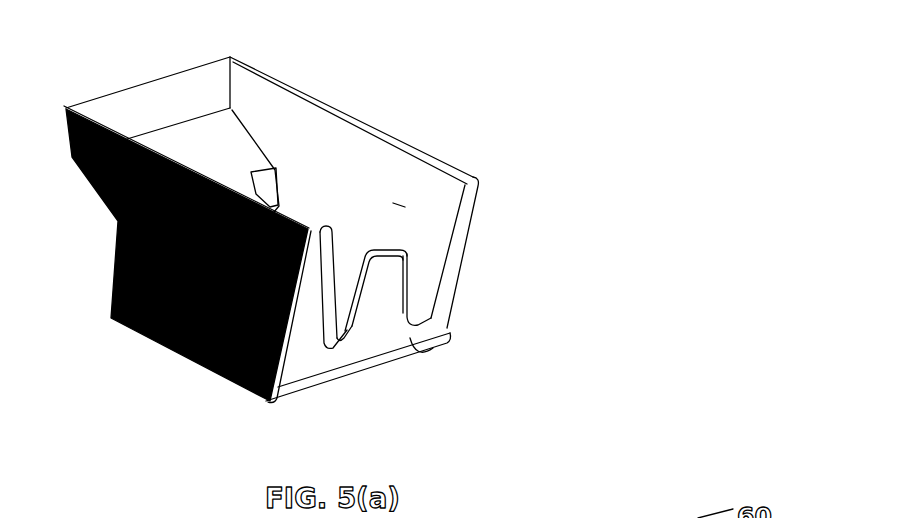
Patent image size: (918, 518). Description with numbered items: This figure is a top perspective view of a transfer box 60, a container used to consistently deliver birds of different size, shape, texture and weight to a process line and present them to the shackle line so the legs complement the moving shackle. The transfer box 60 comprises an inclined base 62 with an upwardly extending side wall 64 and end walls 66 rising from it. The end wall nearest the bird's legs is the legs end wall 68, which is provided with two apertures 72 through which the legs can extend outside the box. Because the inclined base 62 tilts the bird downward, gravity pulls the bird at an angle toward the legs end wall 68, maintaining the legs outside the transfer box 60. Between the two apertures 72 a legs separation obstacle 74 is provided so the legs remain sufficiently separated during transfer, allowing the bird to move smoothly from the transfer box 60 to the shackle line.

The transfer box 60 is at (556, 215).
The inclined base 62 is at (237, 140).
The side wall 64 is at (363, 177).
The end wall 66 is at (173, 97).
The legs end wall 68 is at (452, 337).
The apertures 72 is at (332, 328).
The legs separation obstacle 74 is at (406, 290).